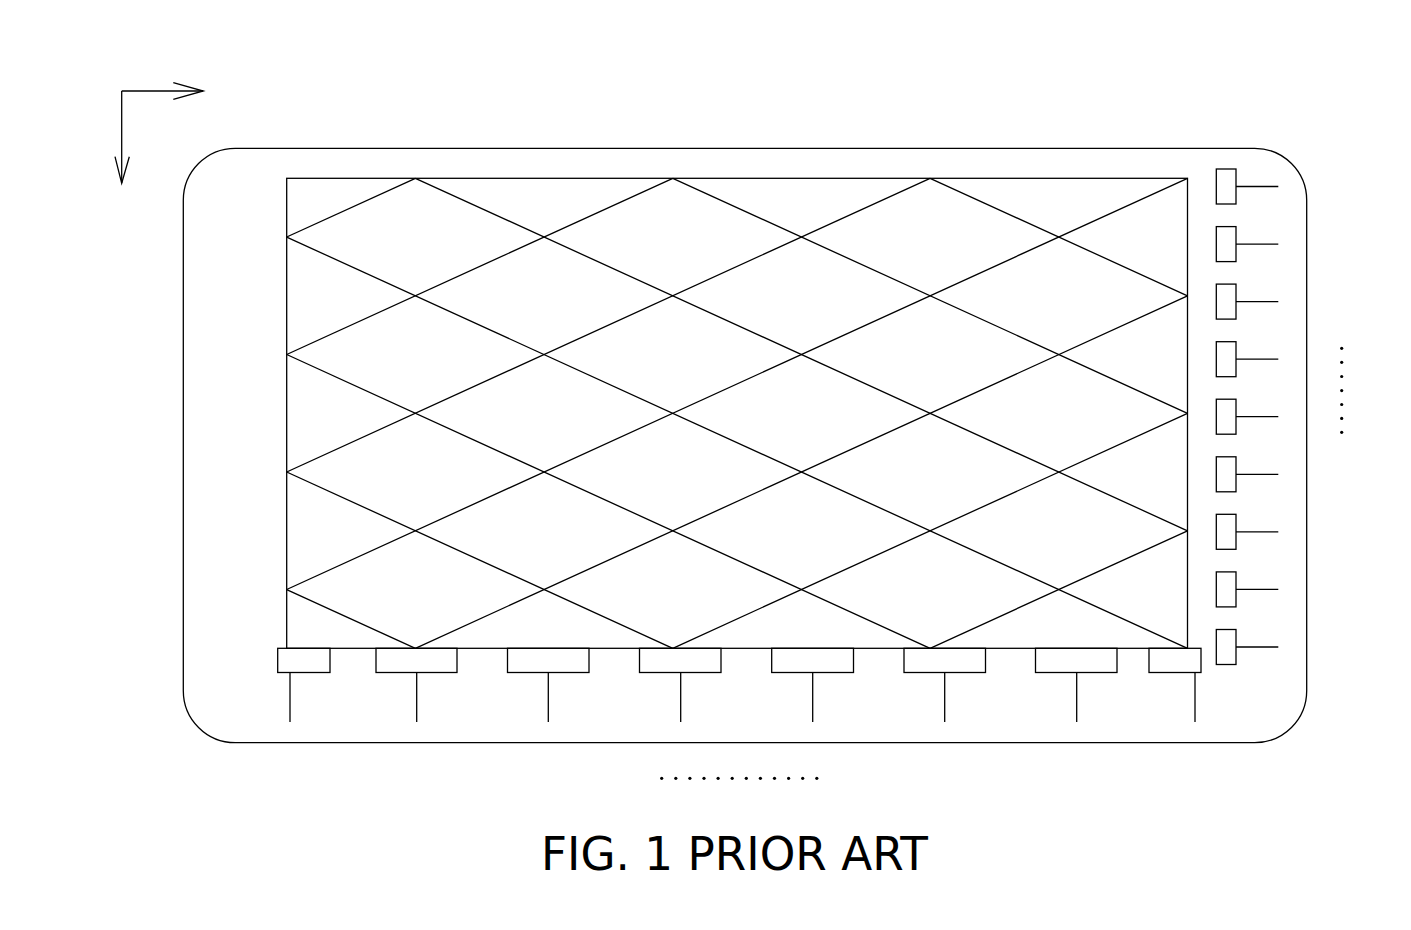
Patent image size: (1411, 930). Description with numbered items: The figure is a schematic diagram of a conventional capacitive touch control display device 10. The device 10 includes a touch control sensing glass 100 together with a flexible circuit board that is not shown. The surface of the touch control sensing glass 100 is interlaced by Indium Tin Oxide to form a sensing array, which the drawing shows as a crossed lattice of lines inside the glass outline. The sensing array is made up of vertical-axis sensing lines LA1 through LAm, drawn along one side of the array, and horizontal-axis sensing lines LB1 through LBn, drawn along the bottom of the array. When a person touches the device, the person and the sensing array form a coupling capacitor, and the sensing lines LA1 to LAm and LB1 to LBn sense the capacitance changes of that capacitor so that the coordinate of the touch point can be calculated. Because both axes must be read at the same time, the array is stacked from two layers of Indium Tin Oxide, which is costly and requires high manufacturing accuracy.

The capacitive touch control display device 10 is at (1263, 76).
The touch control sensing glass 100 is at (1132, 157).
The vertical-axis sensing line LA1 is at (1287, 186).
The vertical-axis sensing line LAm is at (1291, 647).
The horizontal-axis sensing line LB1 is at (304, 720).
The horizontal-axis sensing line LBn is at (1180, 720).